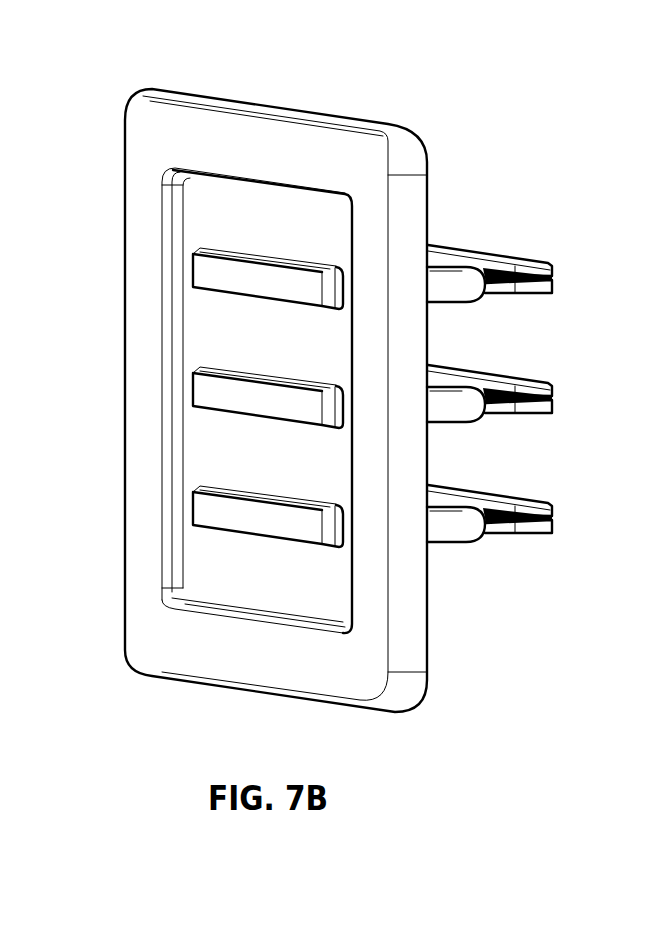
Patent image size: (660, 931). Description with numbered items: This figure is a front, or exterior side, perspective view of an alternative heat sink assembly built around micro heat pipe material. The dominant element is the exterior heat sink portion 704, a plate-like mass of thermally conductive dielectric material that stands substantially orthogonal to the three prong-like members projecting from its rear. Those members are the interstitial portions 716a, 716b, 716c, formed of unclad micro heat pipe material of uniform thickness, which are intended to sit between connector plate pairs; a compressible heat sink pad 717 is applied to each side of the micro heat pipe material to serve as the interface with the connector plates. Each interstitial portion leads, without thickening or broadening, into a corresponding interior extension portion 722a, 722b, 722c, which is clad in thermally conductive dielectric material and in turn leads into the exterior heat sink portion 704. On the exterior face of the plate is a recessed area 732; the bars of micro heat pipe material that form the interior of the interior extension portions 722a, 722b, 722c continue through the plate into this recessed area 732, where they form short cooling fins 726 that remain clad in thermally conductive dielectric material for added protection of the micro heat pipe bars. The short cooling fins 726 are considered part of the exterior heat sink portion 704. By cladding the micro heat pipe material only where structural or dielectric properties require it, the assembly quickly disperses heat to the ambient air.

The exterior heat sink portion 704 is at (358, 127).
The recessed area 732 is at (195, 237).
The short cooling fins 726 is at (191, 269).
The interstitial portion 716a is at (550, 277).
The interstitial portion 716b is at (540, 389).
The interstitial portion 716c is at (540, 509).
The heat sink pad 717 is at (540, 399).
The interior extension portion 722a is at (442, 291).
The interior extension portion 722b is at (489, 426).
The interior extension portion 722c is at (489, 546).